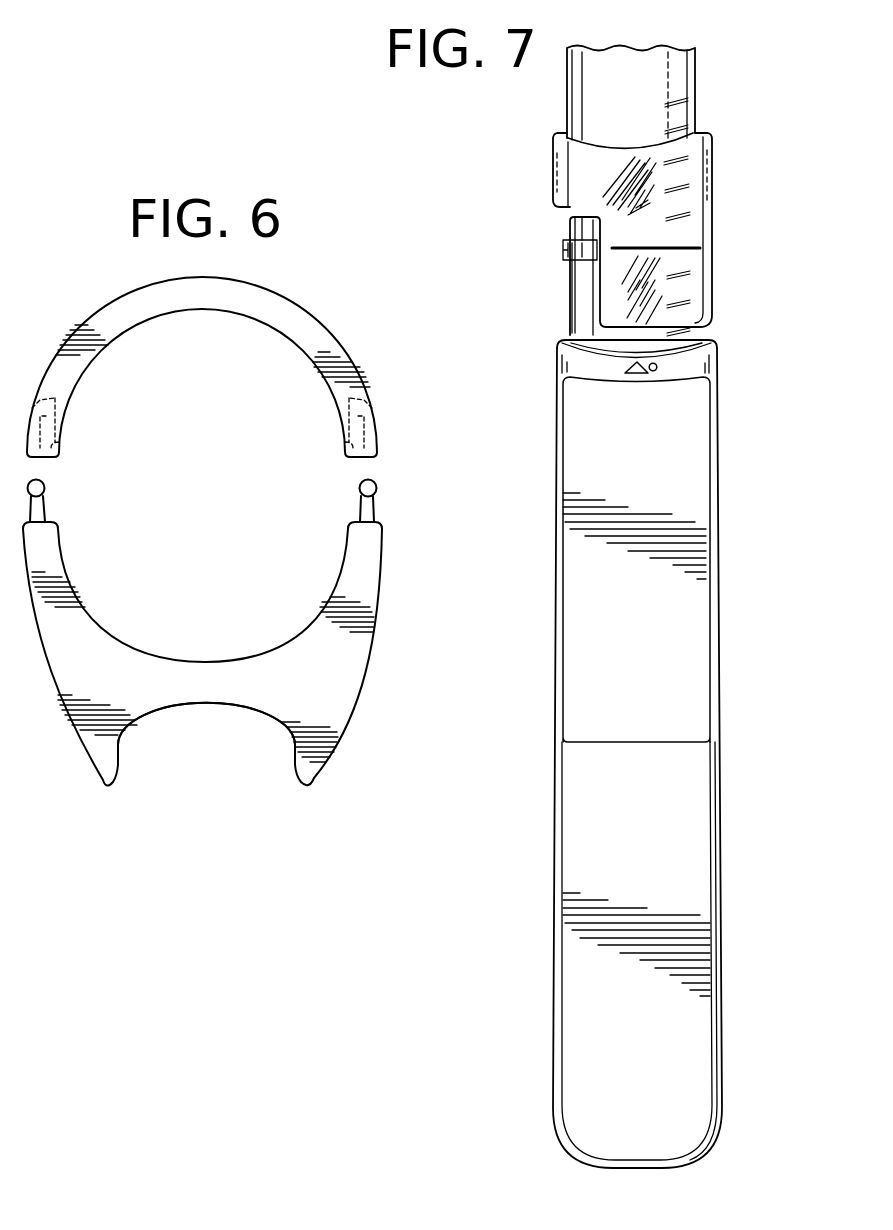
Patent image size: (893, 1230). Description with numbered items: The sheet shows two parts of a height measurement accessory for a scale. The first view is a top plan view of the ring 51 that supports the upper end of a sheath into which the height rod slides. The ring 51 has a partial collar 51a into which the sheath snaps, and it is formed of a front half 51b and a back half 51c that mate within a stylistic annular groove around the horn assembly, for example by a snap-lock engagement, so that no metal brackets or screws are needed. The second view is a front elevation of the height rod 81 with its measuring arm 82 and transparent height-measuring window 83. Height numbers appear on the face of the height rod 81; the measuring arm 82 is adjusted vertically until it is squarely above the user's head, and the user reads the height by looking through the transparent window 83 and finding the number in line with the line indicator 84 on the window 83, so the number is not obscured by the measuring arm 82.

In FIG. 6, the ring 51 is at (245, 653).
In FIG. 6, the partial collar 51a is at (222, 761).
In FIG. 6, the front half 51b is at (363, 570).
In FIG. 6, the back half 51c is at (333, 347).
In FIG. 7, the height rod 81 is at (687, 105).
In FIG. 7, the measuring arm 82 is at (695, 625).
In FIG. 7, the transparent height-measuring window 83 is at (693, 287).
In FIG. 7, the line indicator 84 is at (672, 248).